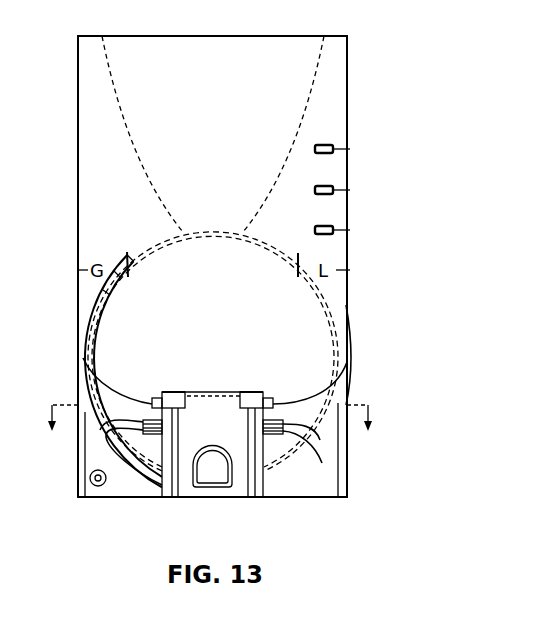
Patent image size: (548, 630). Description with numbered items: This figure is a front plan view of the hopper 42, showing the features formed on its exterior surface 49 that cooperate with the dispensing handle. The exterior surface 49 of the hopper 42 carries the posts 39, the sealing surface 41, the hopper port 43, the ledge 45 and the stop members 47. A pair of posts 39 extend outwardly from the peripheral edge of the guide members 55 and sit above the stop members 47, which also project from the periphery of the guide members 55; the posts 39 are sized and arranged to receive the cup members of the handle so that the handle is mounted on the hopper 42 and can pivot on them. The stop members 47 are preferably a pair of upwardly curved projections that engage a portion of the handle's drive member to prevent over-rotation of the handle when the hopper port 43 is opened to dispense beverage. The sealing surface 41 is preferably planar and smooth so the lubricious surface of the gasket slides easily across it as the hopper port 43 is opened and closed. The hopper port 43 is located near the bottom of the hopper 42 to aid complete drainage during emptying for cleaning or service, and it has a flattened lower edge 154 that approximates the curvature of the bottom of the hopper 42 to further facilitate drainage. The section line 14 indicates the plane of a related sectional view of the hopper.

The section line 14- 14 is at (212, 434).
The posts 39 is at (88, 362).
The sealing surface 41 is at (197, 439).
The hopper 42 is at (332, 108).
The hopper port 43 is at (215, 475).
The ledge 45 is at (187, 384).
The stop members 47 is at (105, 452).
The exterior surface 49 is at (95, 192).
The guide members 55 is at (260, 383).
The flattened lower edge 154 is at (208, 497).